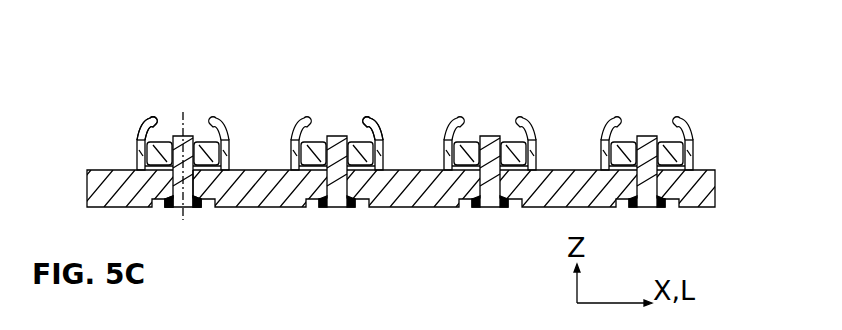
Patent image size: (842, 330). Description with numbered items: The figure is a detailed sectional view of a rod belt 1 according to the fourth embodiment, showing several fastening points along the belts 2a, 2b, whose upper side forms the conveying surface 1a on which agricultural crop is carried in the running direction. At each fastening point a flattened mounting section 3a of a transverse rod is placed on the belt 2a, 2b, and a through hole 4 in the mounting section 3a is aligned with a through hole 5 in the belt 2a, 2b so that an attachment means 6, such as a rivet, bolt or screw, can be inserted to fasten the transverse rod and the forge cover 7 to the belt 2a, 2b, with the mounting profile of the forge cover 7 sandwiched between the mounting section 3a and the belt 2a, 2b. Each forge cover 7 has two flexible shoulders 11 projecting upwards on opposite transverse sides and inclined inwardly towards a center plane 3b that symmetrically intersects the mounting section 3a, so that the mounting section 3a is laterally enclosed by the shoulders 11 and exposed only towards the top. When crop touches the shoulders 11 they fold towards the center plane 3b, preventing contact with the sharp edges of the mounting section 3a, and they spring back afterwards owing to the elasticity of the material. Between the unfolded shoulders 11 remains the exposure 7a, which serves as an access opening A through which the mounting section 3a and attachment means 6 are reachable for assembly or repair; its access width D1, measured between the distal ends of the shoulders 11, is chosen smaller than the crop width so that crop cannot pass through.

The rod belt 1 is at (358, 103).
The conveying surface 1a is at (431, 123).
The belt 2a is at (394, 222).
The belt 2b is at (405, 206).
The mounting section 3a is at (156, 138).
The center plane 3b is at (182, 124).
The through hole 4 is at (200, 170).
The through hole 5 is at (197, 190).
The attachment means 6 is at (178, 204).
The forge cover 7 is at (136, 152).
The exposure 7a is at (502, 123).
The access opening A is at (509, 101).
The flexible shoulder 11 is at (136, 138).
The access width D1 is at (672, 122).